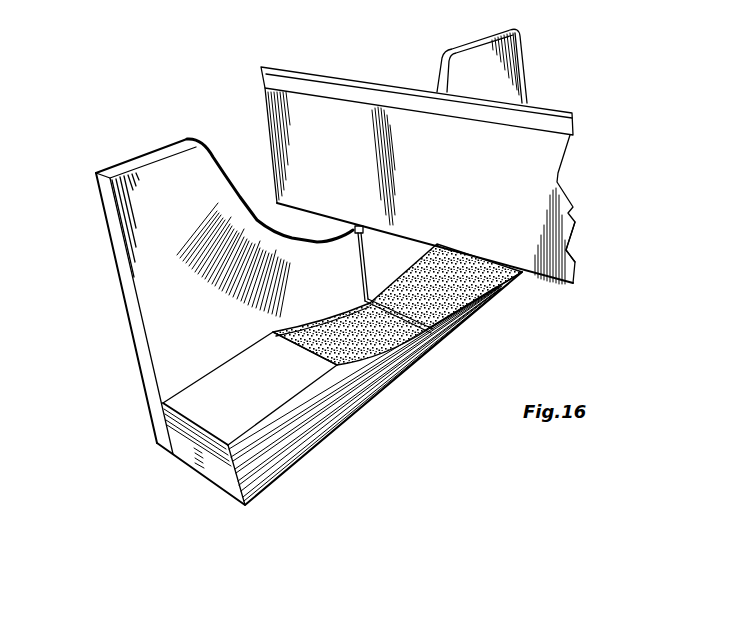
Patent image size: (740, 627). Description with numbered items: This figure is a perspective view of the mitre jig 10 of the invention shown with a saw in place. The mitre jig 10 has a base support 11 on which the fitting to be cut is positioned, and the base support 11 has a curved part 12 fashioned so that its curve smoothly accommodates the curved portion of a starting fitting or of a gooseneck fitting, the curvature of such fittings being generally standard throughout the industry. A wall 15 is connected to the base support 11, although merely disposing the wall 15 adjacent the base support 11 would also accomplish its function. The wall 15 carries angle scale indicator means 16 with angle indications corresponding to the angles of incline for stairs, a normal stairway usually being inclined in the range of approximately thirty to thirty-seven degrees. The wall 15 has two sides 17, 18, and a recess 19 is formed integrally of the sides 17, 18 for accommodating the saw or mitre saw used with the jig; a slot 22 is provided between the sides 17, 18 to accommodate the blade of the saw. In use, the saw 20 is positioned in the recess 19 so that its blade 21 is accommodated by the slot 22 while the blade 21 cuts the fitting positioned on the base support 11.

The mitre jig 10 is at (145, 120).
The base support 11 is at (217, 467).
The curved part 12 is at (377, 353).
The wall 15 is at (198, 356).
The angle scale indicator means 16 is at (180, 230).
The side of wall 17 is at (157, 310).
The side of wall 18 is at (527, 84).
The recess 19 is at (308, 238).
The saw 20 is at (383, 97).
The blade 21 is at (566, 251).
The slot 22 is at (369, 266).